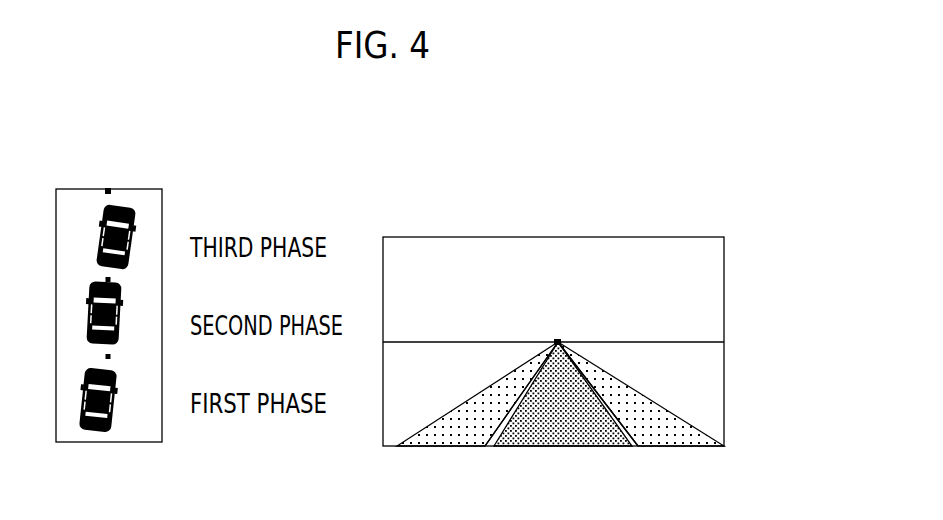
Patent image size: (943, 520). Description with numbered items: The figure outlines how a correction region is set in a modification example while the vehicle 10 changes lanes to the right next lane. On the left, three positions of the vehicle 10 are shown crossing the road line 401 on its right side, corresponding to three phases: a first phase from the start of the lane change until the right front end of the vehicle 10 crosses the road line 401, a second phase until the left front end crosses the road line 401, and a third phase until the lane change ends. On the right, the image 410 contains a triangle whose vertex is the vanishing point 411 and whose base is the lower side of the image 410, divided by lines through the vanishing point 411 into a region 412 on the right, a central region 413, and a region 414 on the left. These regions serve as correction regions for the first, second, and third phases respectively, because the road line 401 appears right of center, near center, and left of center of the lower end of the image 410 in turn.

The vehicle 10 is at (88, 428).
The road line 401 is at (109, 187).
The image 410 is at (724, 408).
The vanishing point 411 is at (558, 340).
The region on the right side 412 is at (628, 407).
The central region 413 is at (572, 433).
The region on the left side 414 is at (471, 399).